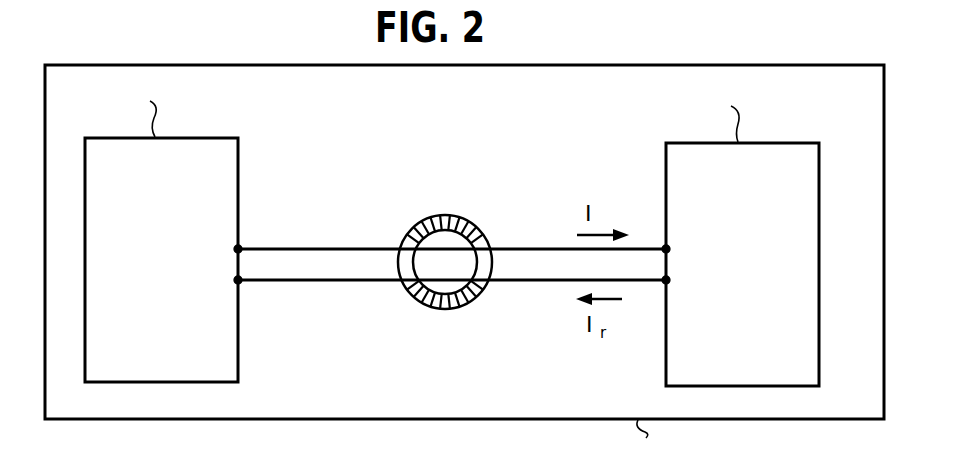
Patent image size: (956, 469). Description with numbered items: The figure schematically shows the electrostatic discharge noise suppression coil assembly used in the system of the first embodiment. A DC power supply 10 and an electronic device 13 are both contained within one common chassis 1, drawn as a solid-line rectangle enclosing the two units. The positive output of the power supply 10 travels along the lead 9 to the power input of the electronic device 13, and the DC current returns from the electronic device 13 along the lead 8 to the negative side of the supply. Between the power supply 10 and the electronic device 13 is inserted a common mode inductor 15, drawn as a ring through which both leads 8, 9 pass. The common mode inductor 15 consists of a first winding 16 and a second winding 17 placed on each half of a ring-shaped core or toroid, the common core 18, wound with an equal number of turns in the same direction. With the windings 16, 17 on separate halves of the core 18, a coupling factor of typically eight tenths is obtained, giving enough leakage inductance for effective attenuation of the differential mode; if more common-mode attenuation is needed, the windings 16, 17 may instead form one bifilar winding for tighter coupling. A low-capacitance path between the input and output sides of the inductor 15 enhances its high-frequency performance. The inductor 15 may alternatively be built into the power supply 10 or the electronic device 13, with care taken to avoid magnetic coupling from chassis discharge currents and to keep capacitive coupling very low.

The common chassis 1 is at (551, 421).
The return lead 8 is at (263, 281).
The positive lead 9 is at (268, 248).
The DC power supply 10 is at (203, 137).
The electronic device 13 is at (793, 142).
The common mode inductor 15 is at (463, 239).
The first winding 16 is at (478, 229).
The second winding 17 is at (478, 296).
The common core 18 is at (487, 263).